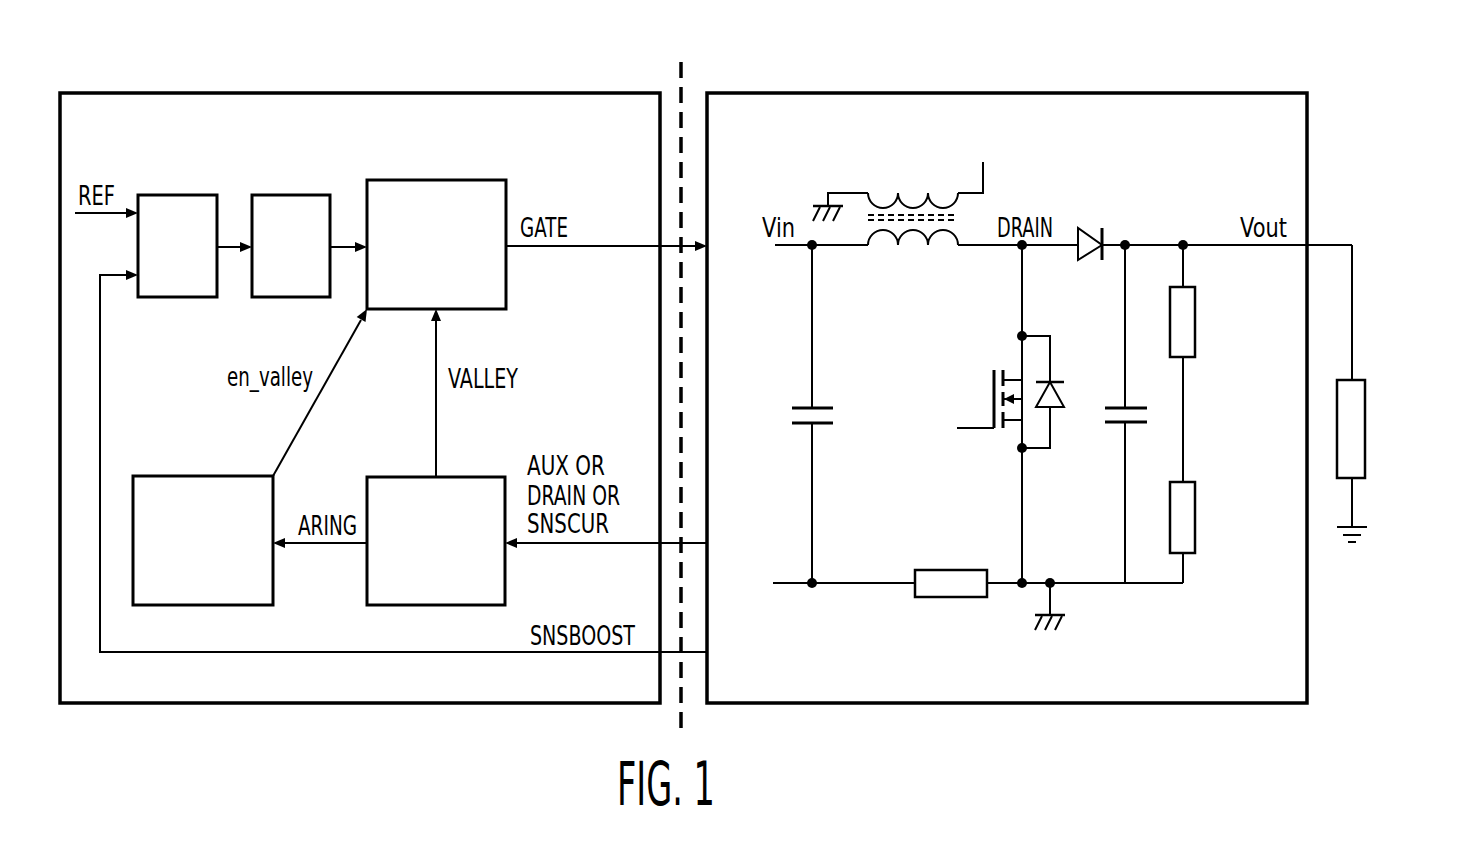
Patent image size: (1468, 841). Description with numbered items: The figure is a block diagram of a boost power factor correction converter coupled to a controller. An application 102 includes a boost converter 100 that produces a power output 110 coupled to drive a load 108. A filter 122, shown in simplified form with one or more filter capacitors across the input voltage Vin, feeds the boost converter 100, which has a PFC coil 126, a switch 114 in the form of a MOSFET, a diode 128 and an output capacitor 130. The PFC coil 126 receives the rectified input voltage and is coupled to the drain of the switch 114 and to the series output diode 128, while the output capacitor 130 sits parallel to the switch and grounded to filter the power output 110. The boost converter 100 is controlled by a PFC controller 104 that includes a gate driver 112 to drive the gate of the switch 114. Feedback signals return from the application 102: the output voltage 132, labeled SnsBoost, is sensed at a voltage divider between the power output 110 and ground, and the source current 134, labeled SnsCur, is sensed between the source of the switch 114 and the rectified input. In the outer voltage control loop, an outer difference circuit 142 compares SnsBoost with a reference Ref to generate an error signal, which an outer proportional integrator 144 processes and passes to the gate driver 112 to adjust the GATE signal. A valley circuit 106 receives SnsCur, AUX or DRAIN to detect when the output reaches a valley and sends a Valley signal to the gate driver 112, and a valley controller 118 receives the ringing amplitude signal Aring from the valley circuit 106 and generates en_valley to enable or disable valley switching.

The boost converter 100 is at (800, 153).
The application 102 is at (1243, 93).
The PFC controller 104 is at (142, 93).
The valley circuit 106 is at (403, 477).
The load 108 is at (1365, 398).
The power output 110 is at (1352, 302).
The gate driver 112 is at (457, 180).
The switch 114 is at (975, 430).
The valley controller 118 is at (203, 476).
The filter 122 is at (784, 478).
The PFC coil 126 is at (972, 220).
The diode 128 is at (1085, 228).
The output capacitor 130 is at (1120, 432).
The output voltage 132 is at (1236, 436).
The source current 134 is at (913, 607).
The outer difference circuit 142 is at (167, 195).
The outer proportional integrator 144 is at (288, 195).